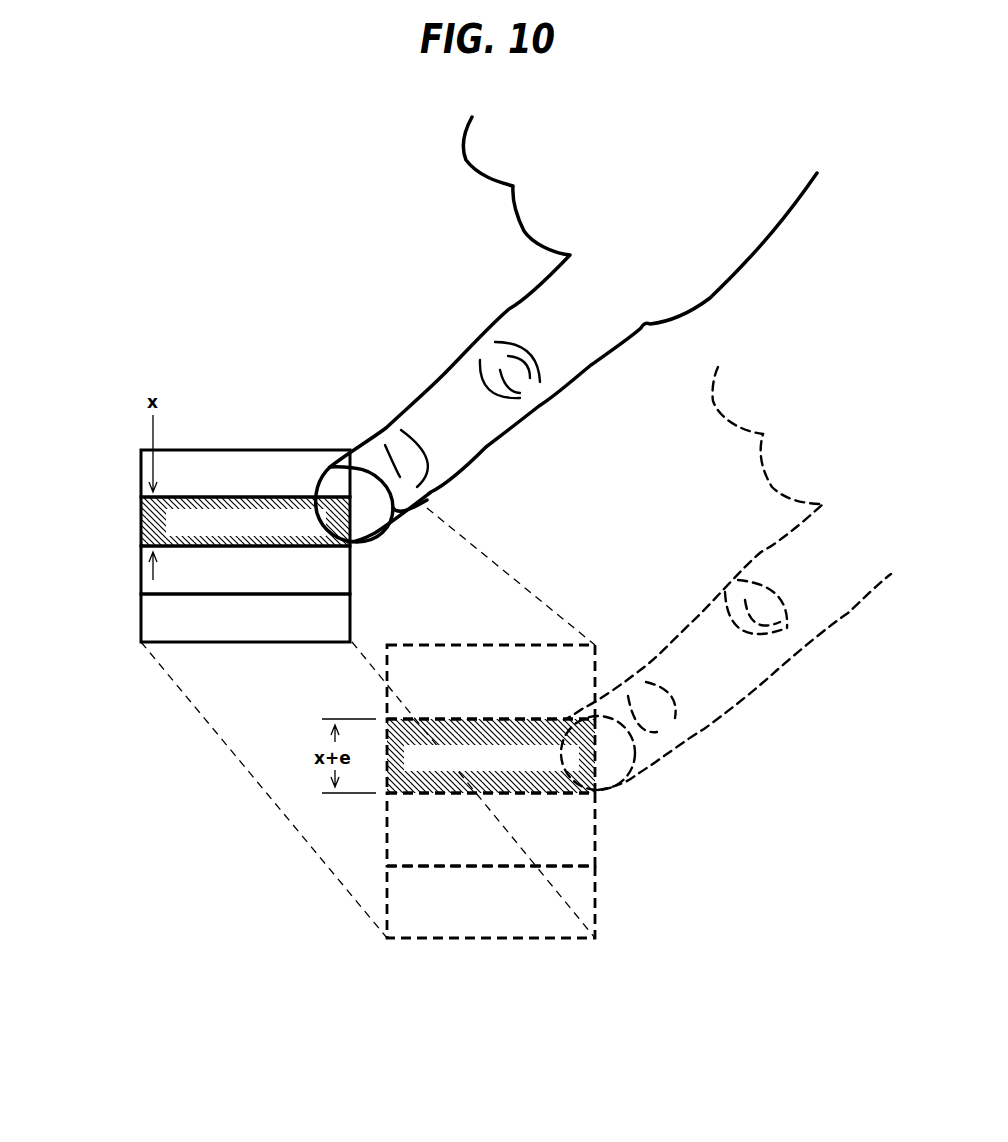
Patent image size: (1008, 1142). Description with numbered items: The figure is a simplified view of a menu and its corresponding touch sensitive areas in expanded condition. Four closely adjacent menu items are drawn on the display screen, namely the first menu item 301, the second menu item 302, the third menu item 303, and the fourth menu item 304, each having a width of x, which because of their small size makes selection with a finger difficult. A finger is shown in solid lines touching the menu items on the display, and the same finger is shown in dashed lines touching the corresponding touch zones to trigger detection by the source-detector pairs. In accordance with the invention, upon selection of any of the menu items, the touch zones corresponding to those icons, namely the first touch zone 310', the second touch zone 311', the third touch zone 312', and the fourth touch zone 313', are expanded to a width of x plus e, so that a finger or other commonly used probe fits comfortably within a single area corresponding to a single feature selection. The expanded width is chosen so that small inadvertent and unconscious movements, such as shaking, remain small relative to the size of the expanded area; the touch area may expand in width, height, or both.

The menu item 1 301 is at (141, 467).
The menu item 2 302 is at (141, 514).
The menu item 3 303 is at (141, 562).
The menu item 4 304 is at (141, 608).
The touch zone 1 310' is at (458, 682).
The touch zone 2 311' is at (525, 768).
The touch zone 3 312' is at (458, 829).
The touch zone 4 313' is at (525, 902).